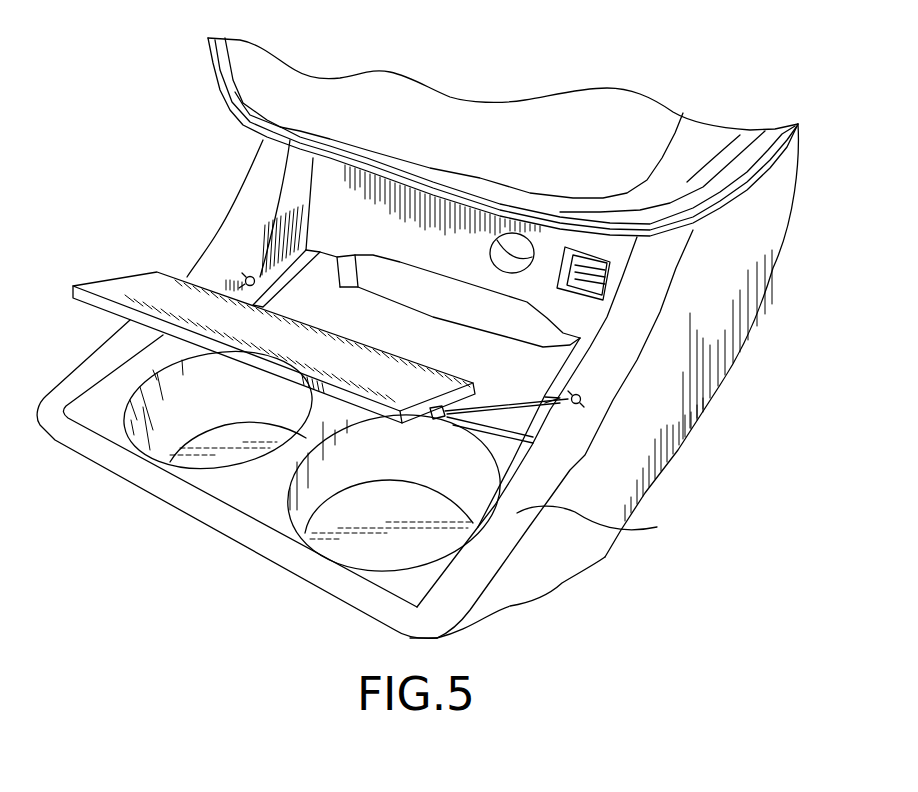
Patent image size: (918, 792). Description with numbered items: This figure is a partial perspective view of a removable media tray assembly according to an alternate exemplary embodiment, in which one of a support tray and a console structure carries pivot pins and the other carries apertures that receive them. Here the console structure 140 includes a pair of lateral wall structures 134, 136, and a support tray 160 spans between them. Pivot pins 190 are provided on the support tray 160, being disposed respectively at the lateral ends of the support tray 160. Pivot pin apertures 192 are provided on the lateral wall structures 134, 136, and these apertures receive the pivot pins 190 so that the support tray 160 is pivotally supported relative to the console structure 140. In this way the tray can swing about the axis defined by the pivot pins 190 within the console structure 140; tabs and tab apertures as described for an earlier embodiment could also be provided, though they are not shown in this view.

The lateral wall structure 134 is at (84, 383).
The lateral wall structure 136 is at (625, 531).
The console structure 140 is at (710, 310).
The support tray 160 is at (134, 288).
The pivot pin 190 is at (437, 415).
The pivot pin aperture 192 is at (248, 280).